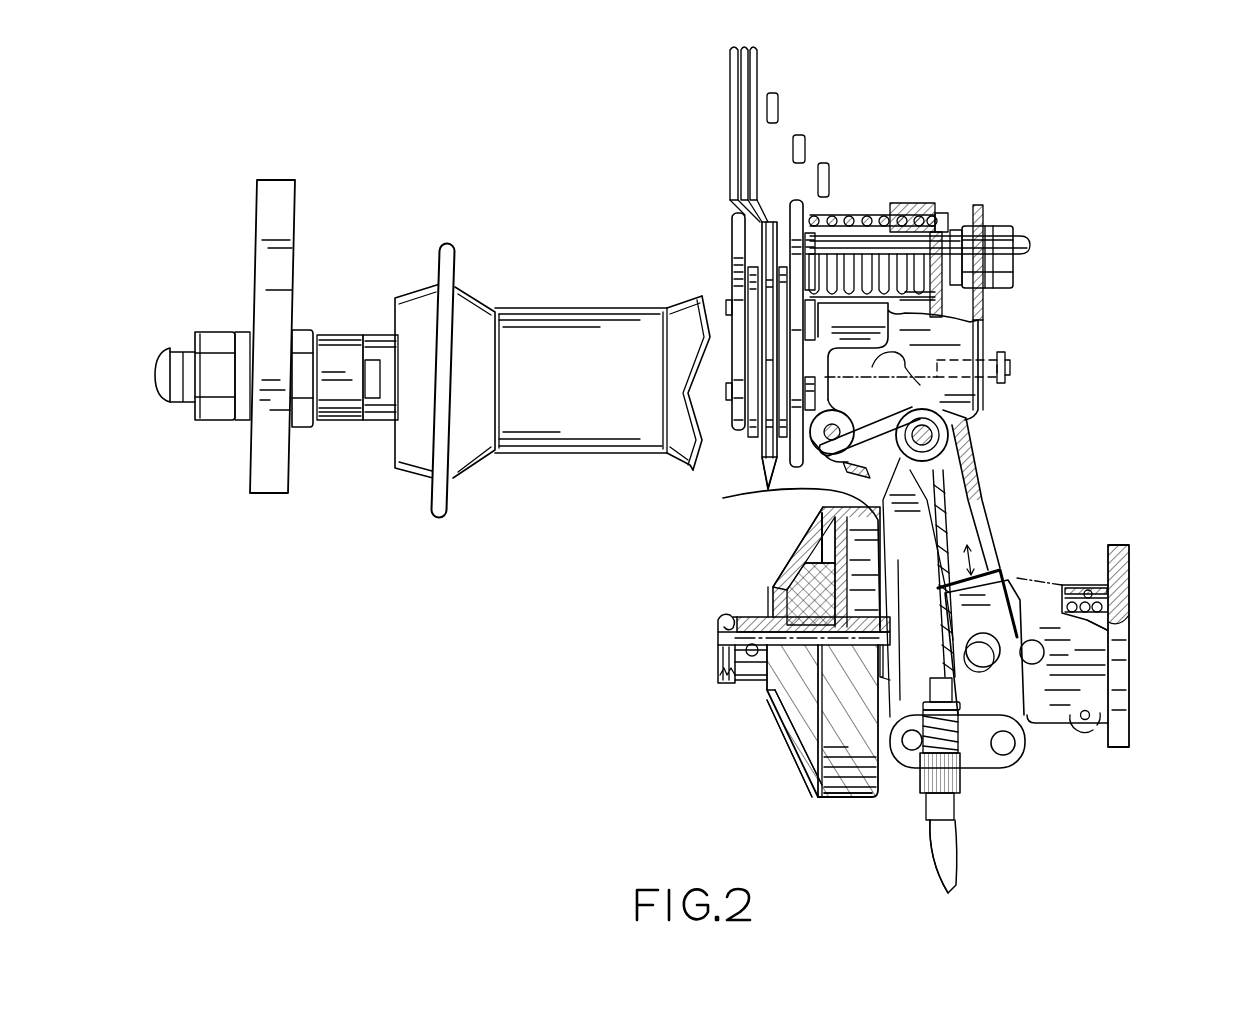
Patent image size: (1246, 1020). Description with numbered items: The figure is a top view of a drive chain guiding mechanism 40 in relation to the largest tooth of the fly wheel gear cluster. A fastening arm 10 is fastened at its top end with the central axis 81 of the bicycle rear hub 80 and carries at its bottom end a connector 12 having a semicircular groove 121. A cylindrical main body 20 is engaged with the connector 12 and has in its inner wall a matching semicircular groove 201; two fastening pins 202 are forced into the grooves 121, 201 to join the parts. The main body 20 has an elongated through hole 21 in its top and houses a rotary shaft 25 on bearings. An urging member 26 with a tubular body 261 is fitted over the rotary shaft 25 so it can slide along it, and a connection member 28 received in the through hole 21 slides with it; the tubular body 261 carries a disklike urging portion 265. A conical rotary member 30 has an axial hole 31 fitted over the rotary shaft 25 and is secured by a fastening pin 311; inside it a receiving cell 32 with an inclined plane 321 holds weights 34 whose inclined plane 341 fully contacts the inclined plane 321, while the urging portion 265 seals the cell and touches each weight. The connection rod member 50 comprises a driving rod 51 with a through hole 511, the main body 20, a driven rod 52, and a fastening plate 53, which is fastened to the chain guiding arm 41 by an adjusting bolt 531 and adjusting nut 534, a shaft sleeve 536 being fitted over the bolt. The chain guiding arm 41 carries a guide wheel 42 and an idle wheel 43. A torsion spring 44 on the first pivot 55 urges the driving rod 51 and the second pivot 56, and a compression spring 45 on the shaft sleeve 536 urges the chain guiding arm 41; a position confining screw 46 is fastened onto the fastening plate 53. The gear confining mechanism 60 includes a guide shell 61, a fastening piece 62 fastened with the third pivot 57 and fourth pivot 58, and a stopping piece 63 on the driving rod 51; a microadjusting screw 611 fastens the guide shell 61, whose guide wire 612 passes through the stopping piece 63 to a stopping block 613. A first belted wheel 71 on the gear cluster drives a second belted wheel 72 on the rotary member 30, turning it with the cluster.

The fastening arm 10 is at (1131, 645).
The connector 12 is at (1105, 599).
The semicircular groove 121 is at (1090, 617).
The main body 20 is at (1060, 725).
The semicircular groove 201 is at (1085, 588).
The fastening pins 202 is at (1095, 596).
The through hole 21 is at (1033, 638).
The rotary shaft 25 is at (728, 644).
The urging member 26 is at (670, 533).
The tubular body 261 is at (810, 568).
The urging portion 265 is at (797, 548).
The connection member 28 is at (983, 668).
The rotary member 30 is at (785, 722).
The axial hole 31 is at (718, 630).
The fastening pin 311 is at (752, 656).
The receiving cell 32 is at (765, 492).
The inclined plane 321 is at (790, 515).
The weights 34 is at (763, 600).
The inclined plane 341 is at (767, 585).
The drive chain guiding mechanism 40 is at (1140, 474).
The chain guiding arm 41 is at (800, 202).
The guide wheel 42 is at (767, 317).
The idle wheel 43 is at (772, 223).
The torsion spring 44 is at (925, 505).
The compression spring 45 is at (847, 212).
The position confining screw 46 is at (1003, 357).
The connection rod member 50 is at (1078, 360).
The driving rod 51 is at (990, 470).
The through hole 511 is at (1028, 640).
The driven rod 52 is at (950, 435).
The fastening plate 53 is at (968, 392).
The adjusting bolt 531 is at (1030, 248).
The adjusting nut 534 is at (1010, 227).
The shaft sleeve 536 is at (940, 203).
The first pivot 55 is at (975, 432).
The second pivot 56 is at (760, 452).
The third pivot 57 is at (933, 773).
The fourth pivot 58 is at (1013, 753).
The gear confining mechanism 60 is at (890, 848).
The guide shell 61 is at (930, 828).
The microadjusting screw 611 is at (870, 790).
The guide wire 612 is at (815, 755).
The stopping block 613 is at (790, 700).
The fastening piece 62 is at (835, 765).
The stopping piece 63 is at (800, 740).
The first belted wheel 71 is at (760, 84).
The second belted wheel 72 is at (715, 618).
The bicycle rear hub 80 is at (515, 418).
The central axis 81 is at (185, 385).